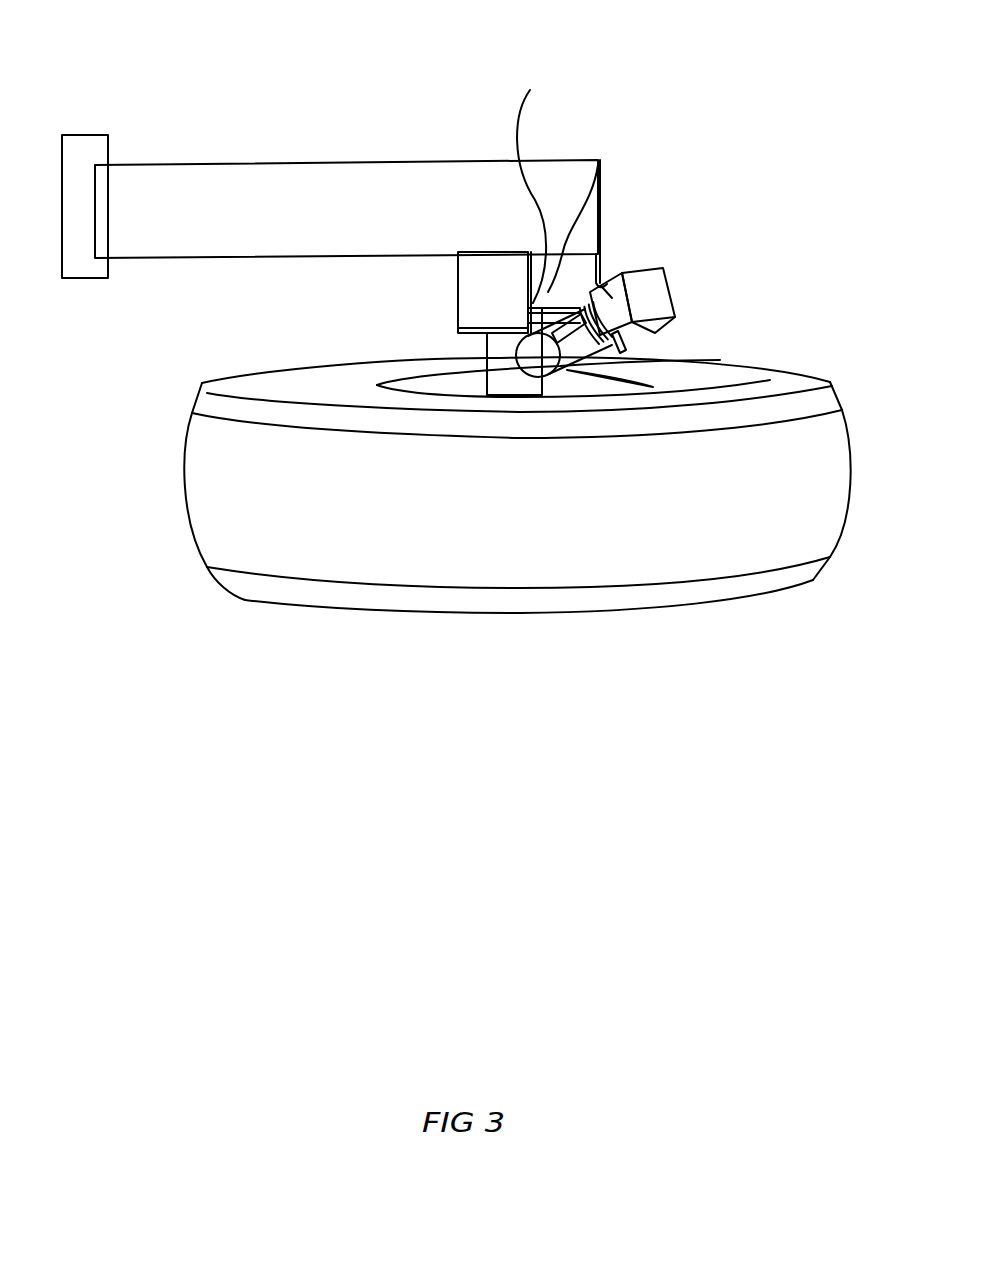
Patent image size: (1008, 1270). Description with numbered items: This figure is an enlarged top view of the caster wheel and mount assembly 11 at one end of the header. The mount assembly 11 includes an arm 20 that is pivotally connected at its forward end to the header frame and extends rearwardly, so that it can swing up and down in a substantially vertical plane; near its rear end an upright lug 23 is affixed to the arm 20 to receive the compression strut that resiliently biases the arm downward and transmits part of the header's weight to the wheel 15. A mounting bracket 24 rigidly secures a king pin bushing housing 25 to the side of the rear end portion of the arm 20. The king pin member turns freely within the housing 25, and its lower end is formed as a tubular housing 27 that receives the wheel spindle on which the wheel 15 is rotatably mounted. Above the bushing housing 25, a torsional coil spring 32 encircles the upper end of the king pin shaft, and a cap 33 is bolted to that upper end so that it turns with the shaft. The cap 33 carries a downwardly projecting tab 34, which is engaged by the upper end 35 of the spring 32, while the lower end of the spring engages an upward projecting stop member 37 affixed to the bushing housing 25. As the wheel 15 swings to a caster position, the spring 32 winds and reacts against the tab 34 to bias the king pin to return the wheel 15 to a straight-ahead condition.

The mount assembly 11 is at (760, 151).
The wheel 15 is at (750, 540).
The arm 20 is at (300, 190).
The upright lug 23 is at (502, 252).
The mounting bracket 24 is at (557, 186).
The king pin bushing housing 25 is at (770, 380).
The tubular housing 27 is at (497, 357).
The torsional coil spring 32 is at (497, 396).
The cap 33 is at (655, 297).
The tab 34 is at (600, 250).
The upper end of spring 35 is at (602, 353).
The stop member 37 is at (600, 163).